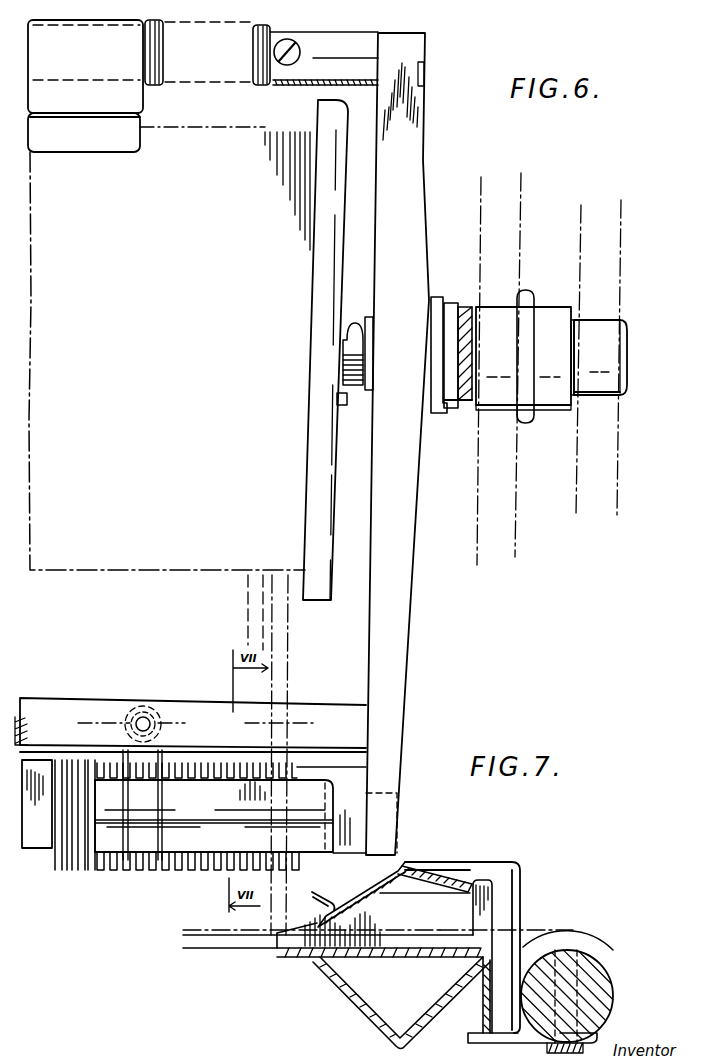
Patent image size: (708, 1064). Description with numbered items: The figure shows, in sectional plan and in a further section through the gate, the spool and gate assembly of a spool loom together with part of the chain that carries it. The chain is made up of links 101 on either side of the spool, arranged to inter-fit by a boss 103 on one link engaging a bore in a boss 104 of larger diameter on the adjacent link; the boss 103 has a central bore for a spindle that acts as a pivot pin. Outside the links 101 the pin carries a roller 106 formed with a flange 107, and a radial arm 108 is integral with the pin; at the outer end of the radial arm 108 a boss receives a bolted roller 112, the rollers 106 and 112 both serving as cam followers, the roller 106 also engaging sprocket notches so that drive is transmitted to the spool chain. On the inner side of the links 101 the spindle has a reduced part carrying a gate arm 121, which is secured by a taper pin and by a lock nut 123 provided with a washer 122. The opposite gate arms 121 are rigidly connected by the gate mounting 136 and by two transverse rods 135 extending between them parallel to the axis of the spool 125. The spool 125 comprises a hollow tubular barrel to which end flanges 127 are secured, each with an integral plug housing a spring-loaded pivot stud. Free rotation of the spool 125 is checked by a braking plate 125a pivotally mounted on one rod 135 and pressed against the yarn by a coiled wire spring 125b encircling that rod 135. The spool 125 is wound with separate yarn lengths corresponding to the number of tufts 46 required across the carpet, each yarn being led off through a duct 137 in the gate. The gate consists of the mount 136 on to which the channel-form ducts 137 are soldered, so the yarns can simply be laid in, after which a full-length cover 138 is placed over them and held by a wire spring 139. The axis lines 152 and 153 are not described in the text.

In FIG. 6, the gate arm 121 is at (393, 643).
In FIG. 6, the washer 122 is at (366, 318).
In FIG. 6, the lock nut 123 is at (345, 405).
In FIG. 6, the spool 125 is at (100, 572).
In FIG. 6, the braking plate 125a is at (110, 132).
In FIG. 6, the coiled wire spring 125b is at (163, 57).
In FIG. 6, the end flange 127 is at (333, 117).
In FIG. 6, the transverse rod 135 is at (317, 27).
In FIG. 7, the transverse rod 135 is at (598, 995).
In FIG. 6, the gate mounting 136 is at (33, 832).
In FIG. 7, the gate mounting 136 is at (433, 958).
In FIG. 6, the duct 137 is at (155, 868).
In FIG. 7, the duct 137 is at (290, 952).
In FIG. 6, the cover 138 is at (297, 838).
In FIG. 7, the cover 138 is at (448, 877).
In FIG. 6, the wire spring 139 is at (128, 793).
In FIG. 7, the wire spring 139 is at (368, 871).
In FIG. 6, the link 101 is at (463, 404).
In FIG. 6, the boss 103 is at (463, 306).
In FIG. 6, the boss 104 is at (430, 412).
In FIG. 6, the roller 106 is at (507, 306).
In FIG. 6, the flange 107 is at (526, 301).
In FIG. 6, the radial arm 108 is at (545, 410).
In FIG. 6, the roller 112 is at (600, 398).
In FIG. 6, the axis line 152 is at (546, 205).
In FIG. 6, the axis line 153 is at (651, 240).
In FIG. 7, the tuft 46 is at (327, 905).